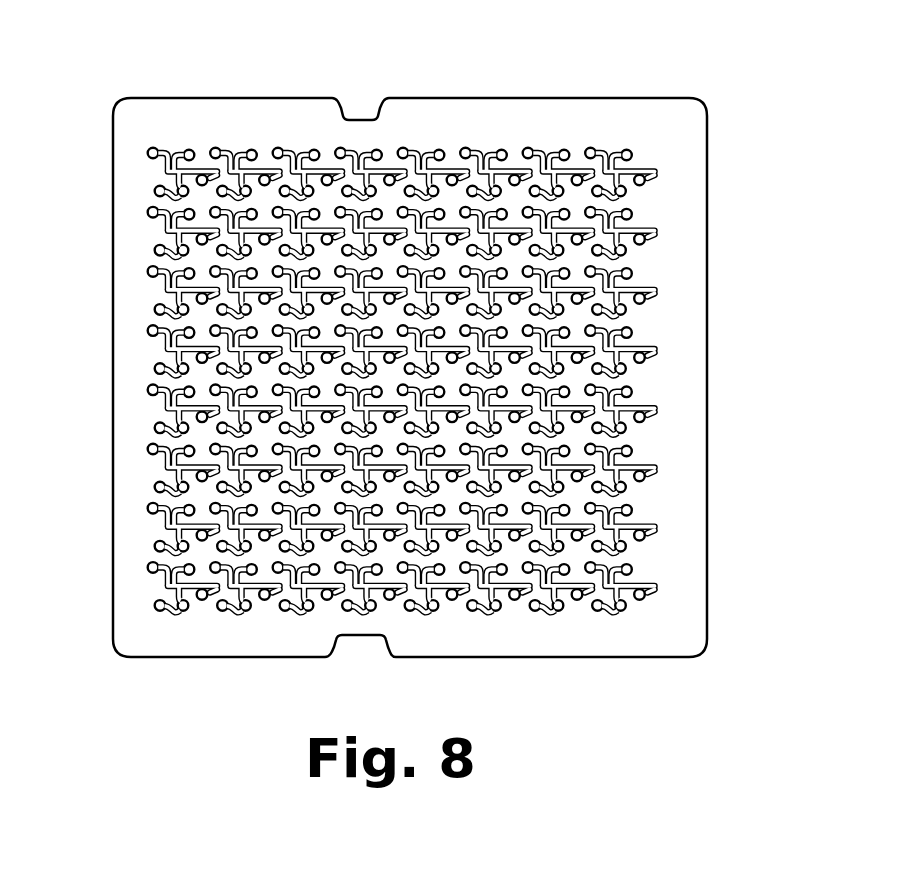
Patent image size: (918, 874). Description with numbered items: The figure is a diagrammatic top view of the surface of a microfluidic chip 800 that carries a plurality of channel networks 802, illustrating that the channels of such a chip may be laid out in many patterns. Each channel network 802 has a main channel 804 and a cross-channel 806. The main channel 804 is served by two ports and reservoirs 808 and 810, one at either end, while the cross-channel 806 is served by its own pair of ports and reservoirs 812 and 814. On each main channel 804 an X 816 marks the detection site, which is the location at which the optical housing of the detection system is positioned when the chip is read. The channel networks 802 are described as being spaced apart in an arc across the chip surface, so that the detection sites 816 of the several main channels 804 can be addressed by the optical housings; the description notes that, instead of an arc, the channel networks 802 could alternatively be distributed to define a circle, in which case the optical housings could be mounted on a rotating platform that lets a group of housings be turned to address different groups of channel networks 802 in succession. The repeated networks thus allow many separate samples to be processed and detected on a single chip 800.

The microfluidic chip 800 is at (731, 431).
The channel networks 802 is at (660, 166).
The main channel 804 is at (200, 168).
The cross-channel 806 is at (174, 157).
The port and reservoir 808 is at (146, 152).
The port and reservoir 810 is at (203, 174).
The port and reservoir 812 is at (153, 191).
The port and reservoir 814 is at (176, 195).
The detection site marker (X) 816 is at (188, 149).